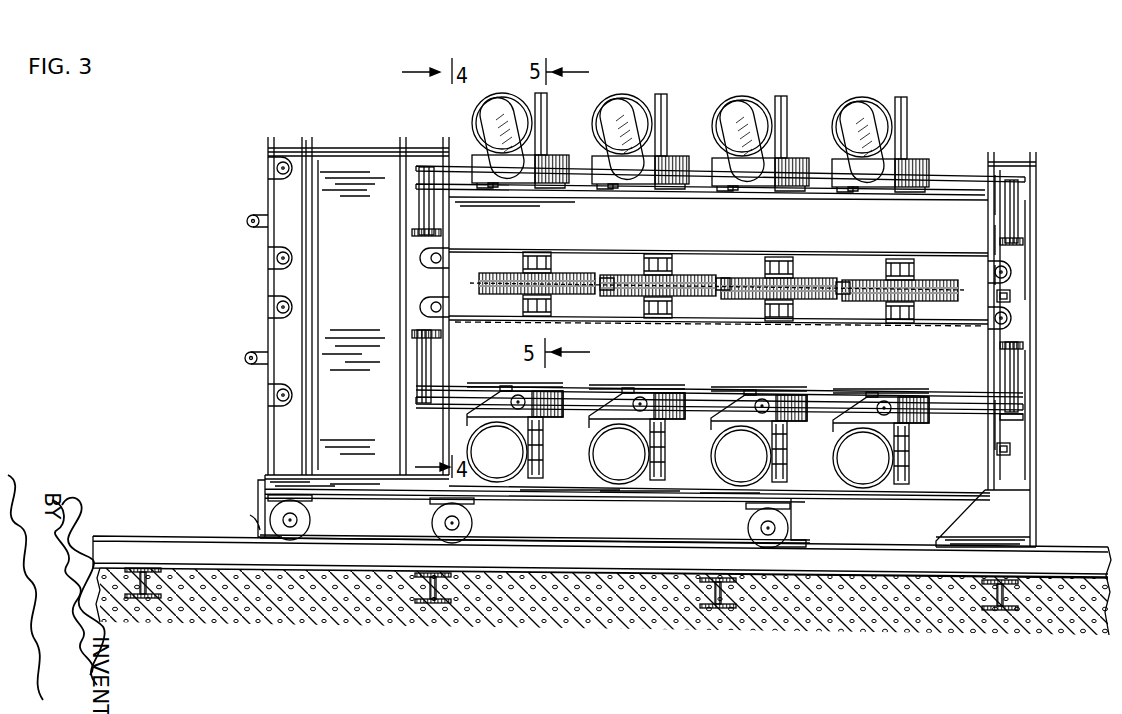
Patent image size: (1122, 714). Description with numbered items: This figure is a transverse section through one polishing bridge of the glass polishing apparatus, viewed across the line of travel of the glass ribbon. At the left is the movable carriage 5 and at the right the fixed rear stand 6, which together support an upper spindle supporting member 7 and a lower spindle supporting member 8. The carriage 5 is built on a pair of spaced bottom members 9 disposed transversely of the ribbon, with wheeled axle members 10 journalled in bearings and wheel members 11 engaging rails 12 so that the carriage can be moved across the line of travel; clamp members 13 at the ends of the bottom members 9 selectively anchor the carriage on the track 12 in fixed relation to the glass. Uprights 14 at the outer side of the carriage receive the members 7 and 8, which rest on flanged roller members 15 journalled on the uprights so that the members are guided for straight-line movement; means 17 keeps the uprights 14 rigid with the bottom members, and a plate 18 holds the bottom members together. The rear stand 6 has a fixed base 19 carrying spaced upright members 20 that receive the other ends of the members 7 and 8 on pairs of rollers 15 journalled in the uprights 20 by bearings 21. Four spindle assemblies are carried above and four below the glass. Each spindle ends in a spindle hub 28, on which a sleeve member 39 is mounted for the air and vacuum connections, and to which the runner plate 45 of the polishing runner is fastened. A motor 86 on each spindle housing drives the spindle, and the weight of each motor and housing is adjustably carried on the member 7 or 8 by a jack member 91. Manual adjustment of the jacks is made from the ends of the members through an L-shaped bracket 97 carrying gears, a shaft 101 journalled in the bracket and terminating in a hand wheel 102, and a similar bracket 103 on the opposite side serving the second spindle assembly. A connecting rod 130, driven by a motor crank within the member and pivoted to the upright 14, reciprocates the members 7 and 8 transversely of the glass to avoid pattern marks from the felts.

The movable carriage 5 is at (330, 157).
The fixed rear stand 6 is at (1003, 160).
The upper spindle supporting member 7 is at (664, 230).
The lower spindle supporting member 8 is at (707, 377).
The bottom members 9 is at (610, 526).
The wheeled axle members 10 is at (292, 520).
The wheel members 11 is at (462, 522).
The rails 12 is at (880, 562).
The clamp members 13 is at (262, 520).
The uprights 14 is at (400, 273).
The roller members 15 is at (266, 168).
The means for maintaining uprights rigid 17 is at (355, 428).
The plate 18 is at (672, 490).
The fixed base 19 is at (1010, 510).
The upright members 20 is at (1013, 423).
The bearings 21 is at (1010, 272).
The spindle hub 28 is at (672, 262).
The sleeve member 39 is at (552, 262).
The runner plate 45 is at (510, 276).
The motor 86 is at (478, 118).
The jack member 91 is at (497, 184).
The L-shaped bracket 97 is at (458, 178).
The shaft 101 is at (420, 190).
The hand wheel 102 is at (414, 229).
The bracket 103 is at (967, 195).
The connecting rod 130 is at (250, 217).